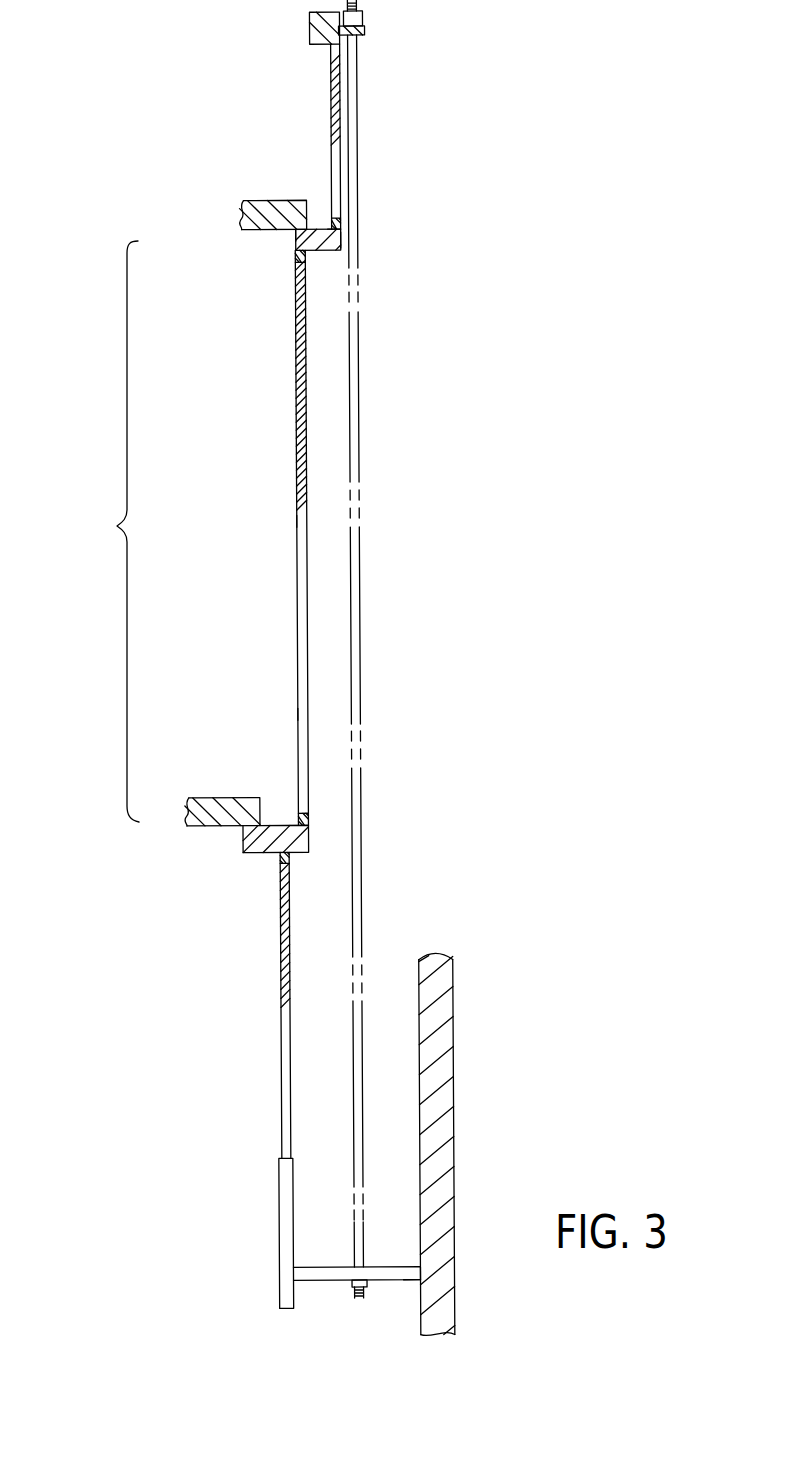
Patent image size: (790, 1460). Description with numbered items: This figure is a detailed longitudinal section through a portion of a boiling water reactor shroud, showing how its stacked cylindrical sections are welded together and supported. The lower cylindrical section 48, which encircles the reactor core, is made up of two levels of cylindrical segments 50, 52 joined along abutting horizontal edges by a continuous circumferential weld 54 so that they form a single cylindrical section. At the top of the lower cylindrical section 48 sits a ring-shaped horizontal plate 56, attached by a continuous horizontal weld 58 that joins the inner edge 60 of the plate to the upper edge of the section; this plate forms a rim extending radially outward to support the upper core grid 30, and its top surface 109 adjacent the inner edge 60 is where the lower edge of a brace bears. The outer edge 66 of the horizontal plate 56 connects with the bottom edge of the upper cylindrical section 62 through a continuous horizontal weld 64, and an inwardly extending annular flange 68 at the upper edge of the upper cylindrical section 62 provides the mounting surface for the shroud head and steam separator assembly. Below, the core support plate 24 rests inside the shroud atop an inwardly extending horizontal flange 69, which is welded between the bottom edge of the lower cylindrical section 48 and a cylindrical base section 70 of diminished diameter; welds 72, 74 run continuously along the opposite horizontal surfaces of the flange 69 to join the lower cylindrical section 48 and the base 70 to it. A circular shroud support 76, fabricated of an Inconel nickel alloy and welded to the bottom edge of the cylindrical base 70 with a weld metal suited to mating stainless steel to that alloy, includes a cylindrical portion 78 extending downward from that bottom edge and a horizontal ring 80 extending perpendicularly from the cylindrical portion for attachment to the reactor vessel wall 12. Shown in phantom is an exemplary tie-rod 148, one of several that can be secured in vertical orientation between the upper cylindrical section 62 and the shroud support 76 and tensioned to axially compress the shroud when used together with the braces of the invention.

The reactor vessel wall 12 is at (452, 1067).
The core support plate 24 is at (220, 827).
The upper core grid 30 is at (250, 200).
The lower cylindrical section 48 is at (105, 531).
The cylindrical segment 50 is at (293, 714).
The cylindrical segment 52 is at (295, 357).
The continuous circumferential weld 54 is at (298, 523).
The horizontal plate 56 is at (322, 250).
The continuous horizontal weld 58 is at (297, 249).
The inner edge 60 is at (297, 233).
The upper cylindrical section 62 is at (332, 137).
The continuous horizontal weld 64 is at (341, 233).
The outer edge 66 is at (342, 238).
The annular flange 68 is at (312, 14).
The horizontal flange 69 is at (260, 852).
The cylindrical base section 70 is at (282, 1045).
The weld 72 is at (293, 820).
The weld 74 is at (280, 852).
The shroud support 76 is at (280, 1282).
The cylindrical portion 78 is at (279, 1172).
The horizontal ring 80 is at (393, 1287).
The top surface 109 is at (325, 227).
The tie-rod 148 is at (366, 701).